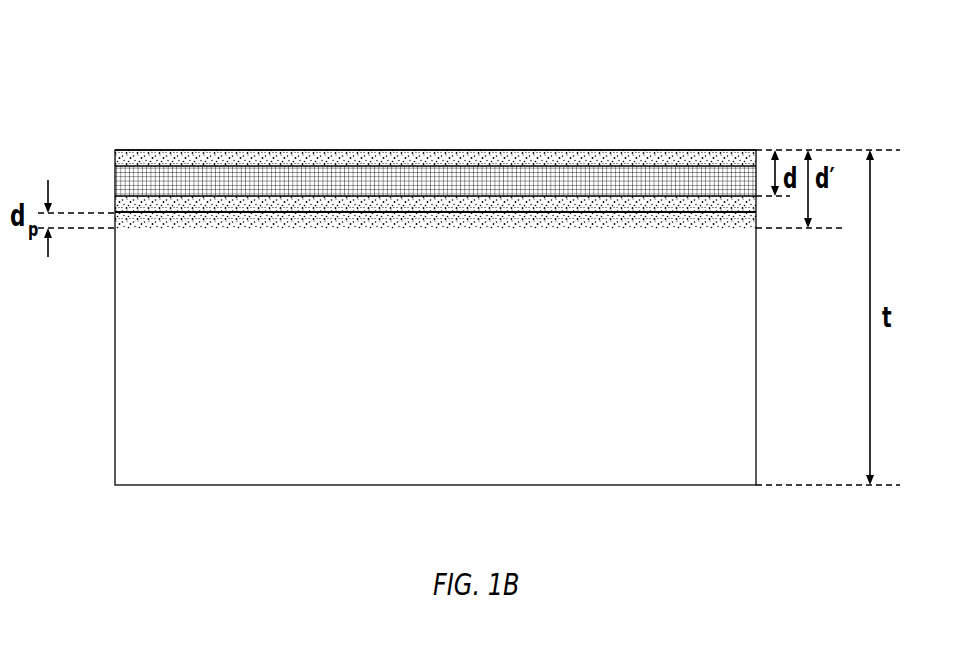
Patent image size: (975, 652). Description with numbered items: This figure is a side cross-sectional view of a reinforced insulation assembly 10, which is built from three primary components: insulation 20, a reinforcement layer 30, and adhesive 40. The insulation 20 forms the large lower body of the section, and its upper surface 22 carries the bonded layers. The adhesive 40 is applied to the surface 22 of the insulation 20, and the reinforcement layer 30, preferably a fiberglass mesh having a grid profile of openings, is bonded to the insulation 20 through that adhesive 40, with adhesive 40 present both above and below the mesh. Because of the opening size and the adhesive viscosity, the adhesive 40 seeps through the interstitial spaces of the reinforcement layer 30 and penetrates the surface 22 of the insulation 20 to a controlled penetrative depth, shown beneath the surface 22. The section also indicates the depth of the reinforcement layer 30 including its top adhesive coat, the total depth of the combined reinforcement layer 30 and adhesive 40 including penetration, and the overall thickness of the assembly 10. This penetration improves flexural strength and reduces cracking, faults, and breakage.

The reinforced insulation assembly 10 is at (796, 252).
The insulation 20 is at (655, 435).
The surface 22 is at (716, 213).
The reinforcement layer 30 is at (410, 173).
The adhesive 40 is at (117, 205).